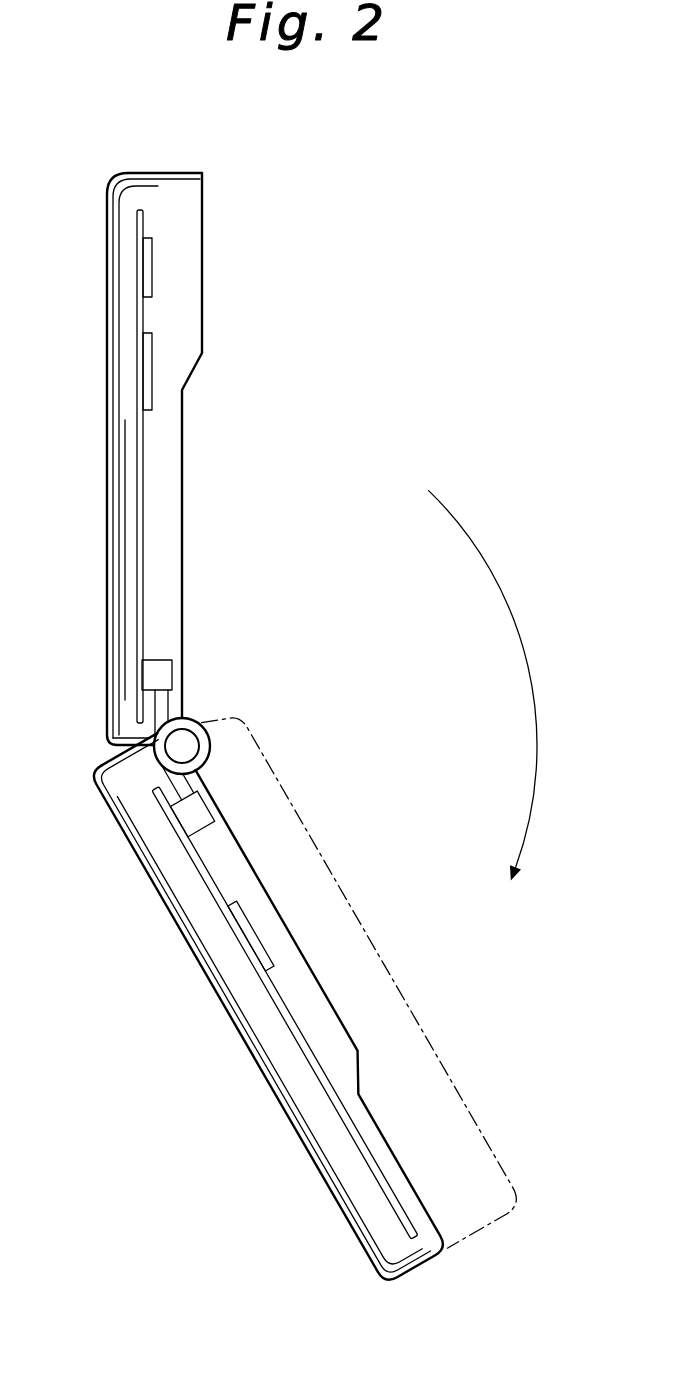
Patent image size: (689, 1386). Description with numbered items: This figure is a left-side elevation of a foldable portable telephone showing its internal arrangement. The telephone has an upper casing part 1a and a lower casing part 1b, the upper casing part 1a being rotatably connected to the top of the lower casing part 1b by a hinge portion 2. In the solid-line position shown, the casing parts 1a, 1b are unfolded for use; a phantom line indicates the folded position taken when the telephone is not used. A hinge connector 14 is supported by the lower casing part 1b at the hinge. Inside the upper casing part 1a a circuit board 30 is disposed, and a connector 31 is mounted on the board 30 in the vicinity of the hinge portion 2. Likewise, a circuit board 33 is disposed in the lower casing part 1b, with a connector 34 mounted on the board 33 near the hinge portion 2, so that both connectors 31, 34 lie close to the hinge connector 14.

The upper casing part 1a is at (203, 311).
The lower casing part 1b is at (365, 1209).
The hinge portion 2 is at (209, 698).
The hinge connector 14 is at (152, 775).
The circuit board 30 is at (140, 465).
The connector 31 is at (157, 672).
The circuit board 33 is at (270, 1000).
The connector 34 is at (196, 815).